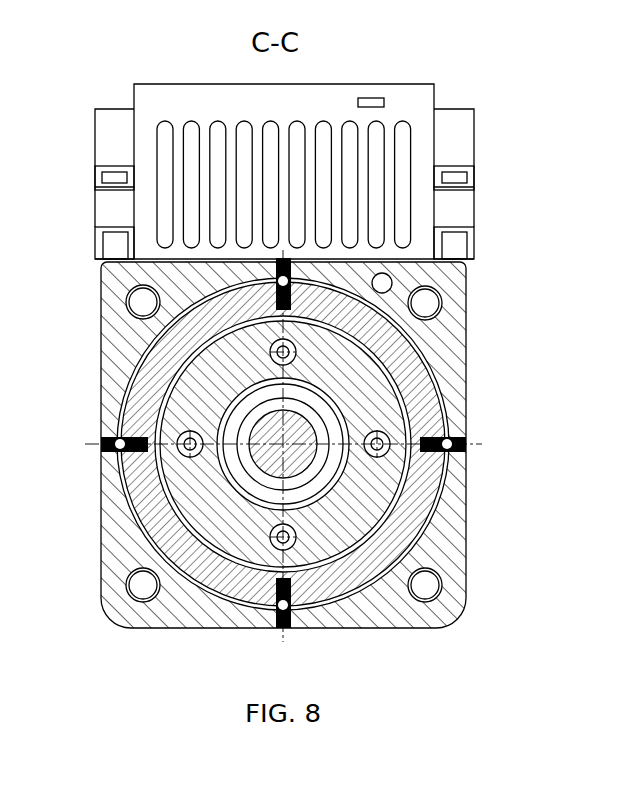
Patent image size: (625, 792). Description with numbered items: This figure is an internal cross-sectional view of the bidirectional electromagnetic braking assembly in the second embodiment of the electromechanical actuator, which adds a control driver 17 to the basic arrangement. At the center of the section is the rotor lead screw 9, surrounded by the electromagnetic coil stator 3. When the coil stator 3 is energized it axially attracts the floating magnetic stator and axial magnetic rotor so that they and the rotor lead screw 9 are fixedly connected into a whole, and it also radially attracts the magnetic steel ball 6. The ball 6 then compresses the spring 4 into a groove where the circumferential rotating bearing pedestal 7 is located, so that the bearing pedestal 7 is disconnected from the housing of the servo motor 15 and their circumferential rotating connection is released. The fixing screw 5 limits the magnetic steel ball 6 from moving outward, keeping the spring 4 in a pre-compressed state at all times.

The electromagnetic coil stator 3 is at (236, 483).
The spring 4 is at (447, 388).
The fixing screw 5 is at (108, 387).
The magnetic steel ball 6 is at (440, 382).
The circumferential rotating bearing pedestal 7 is at (397, 480).
The rotor lead screw 9 is at (272, 377).
The servo motor 15 is at (438, 275).
The control driver 17 is at (150, 170).